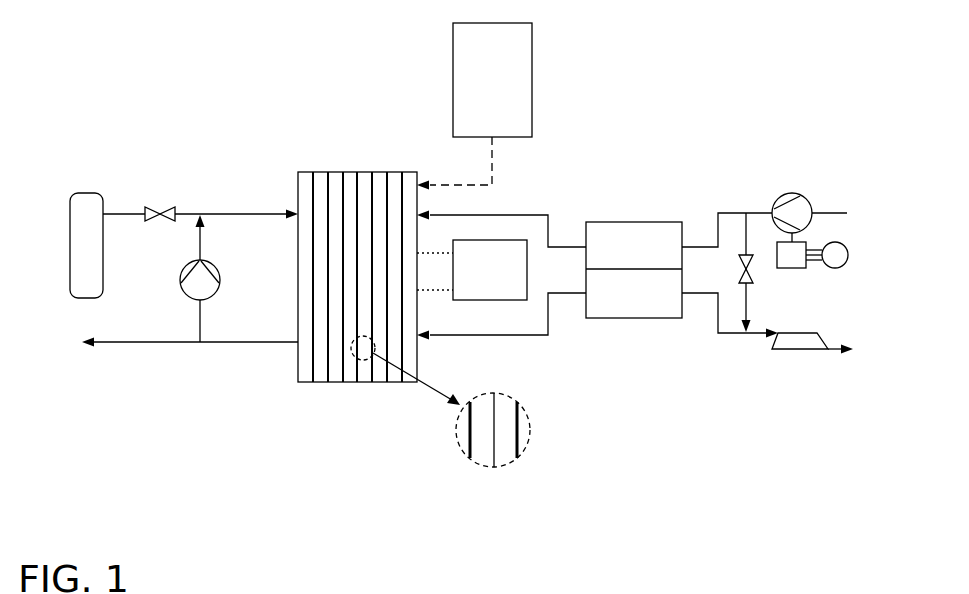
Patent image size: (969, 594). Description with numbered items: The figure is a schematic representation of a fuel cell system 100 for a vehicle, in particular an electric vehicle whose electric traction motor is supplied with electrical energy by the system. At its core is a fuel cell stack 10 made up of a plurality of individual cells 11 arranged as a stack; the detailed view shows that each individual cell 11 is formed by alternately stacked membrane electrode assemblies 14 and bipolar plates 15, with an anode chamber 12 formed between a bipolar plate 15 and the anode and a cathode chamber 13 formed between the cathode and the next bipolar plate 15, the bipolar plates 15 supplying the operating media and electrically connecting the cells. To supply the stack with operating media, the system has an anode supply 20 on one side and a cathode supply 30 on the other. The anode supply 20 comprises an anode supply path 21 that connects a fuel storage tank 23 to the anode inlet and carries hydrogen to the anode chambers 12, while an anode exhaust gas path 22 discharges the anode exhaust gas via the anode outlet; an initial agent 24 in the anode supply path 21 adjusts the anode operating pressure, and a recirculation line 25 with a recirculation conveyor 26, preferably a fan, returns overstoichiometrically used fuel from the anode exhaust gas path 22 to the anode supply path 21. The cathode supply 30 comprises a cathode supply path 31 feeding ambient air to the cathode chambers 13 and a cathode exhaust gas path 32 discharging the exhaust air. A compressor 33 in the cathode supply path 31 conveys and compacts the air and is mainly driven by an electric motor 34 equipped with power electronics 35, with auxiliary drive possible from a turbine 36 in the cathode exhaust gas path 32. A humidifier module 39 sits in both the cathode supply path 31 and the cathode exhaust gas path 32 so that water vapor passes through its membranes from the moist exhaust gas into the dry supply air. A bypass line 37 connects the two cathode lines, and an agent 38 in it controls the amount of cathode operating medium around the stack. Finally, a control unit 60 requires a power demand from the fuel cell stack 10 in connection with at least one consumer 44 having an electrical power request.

The fuel cell system 100 is at (626, 84).
The fuel cell stack 10 is at (353, 140).
The individual cell 11 is at (333, 180).
The anode chamber 12 is at (484, 450).
The cathode chamber 13 is at (507, 450).
The membrane electrode assembly 14 is at (494, 454).
The bipolar plate 15 is at (470, 436).
The anode supply 20 is at (137, 148).
The anode supply path 21 is at (215, 214).
The anode exhaust gas path 22 is at (137, 344).
The fuel storage tank 23 is at (88, 203).
The initial agent 24 is at (152, 211).
The recirculation line 25 is at (198, 322).
The recirculation conveyor 26 is at (184, 270).
The cathode supply 30 is at (668, 136).
The cathode supply path 31 is at (830, 213).
The cathode exhaust gas path 32 is at (833, 351).
The compressor 33 is at (798, 197).
The electric motor 34 is at (797, 268).
The power electronics 35 is at (848, 257).
The turbine 36 is at (798, 345).
The bypass line 37 is at (748, 310).
The agent 38 is at (742, 278).
The humidifier module 39 is at (637, 303).
The consumer 44 is at (490, 270).
The control unit 60 is at (530, 65).